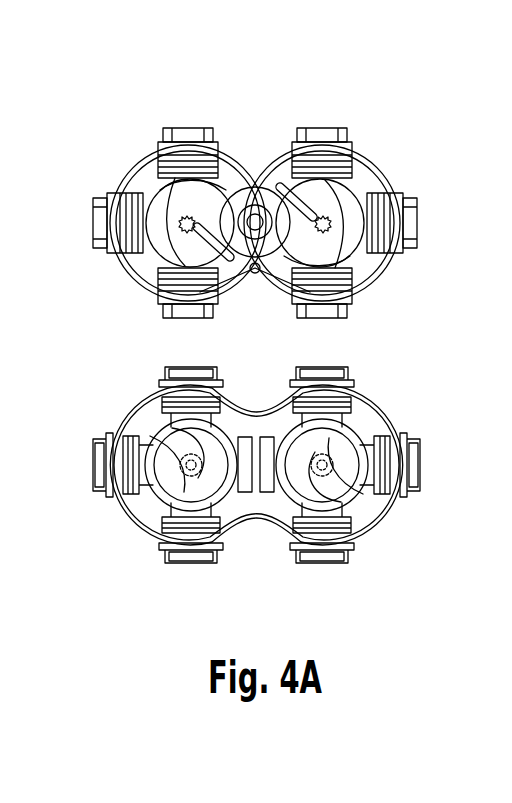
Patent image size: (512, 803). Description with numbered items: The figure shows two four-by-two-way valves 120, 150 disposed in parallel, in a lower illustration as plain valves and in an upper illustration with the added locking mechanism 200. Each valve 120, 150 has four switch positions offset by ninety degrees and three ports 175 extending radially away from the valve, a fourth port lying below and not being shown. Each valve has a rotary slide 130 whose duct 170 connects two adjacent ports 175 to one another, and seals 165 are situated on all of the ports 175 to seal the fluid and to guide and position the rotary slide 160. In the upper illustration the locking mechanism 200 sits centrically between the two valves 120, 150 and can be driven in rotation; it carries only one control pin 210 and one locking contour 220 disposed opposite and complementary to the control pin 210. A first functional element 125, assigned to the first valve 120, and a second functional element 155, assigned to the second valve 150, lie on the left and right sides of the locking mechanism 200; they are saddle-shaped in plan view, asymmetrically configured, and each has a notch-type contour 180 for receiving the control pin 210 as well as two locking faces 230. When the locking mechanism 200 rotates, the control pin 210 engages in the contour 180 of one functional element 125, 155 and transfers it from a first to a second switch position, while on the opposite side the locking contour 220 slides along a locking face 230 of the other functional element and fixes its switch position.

The first valve 120 is at (160, 217).
The first functional element 125 is at (167, 237).
The rotary slide 130 is at (195, 258).
The second valve 150 is at (340, 212).
The second functional element 155 is at (368, 215).
The rotary slide 160 is at (356, 253).
The seals 165 is at (200, 172).
The duct 170 is at (152, 198).
The ports 175 is at (190, 128).
The contour 180 is at (345, 192).
The locking mechanism 200 is at (265, 205).
The control pin 210 is at (257, 274).
The locking contour 220 is at (262, 205).
The locking faces 230 is at (247, 197).